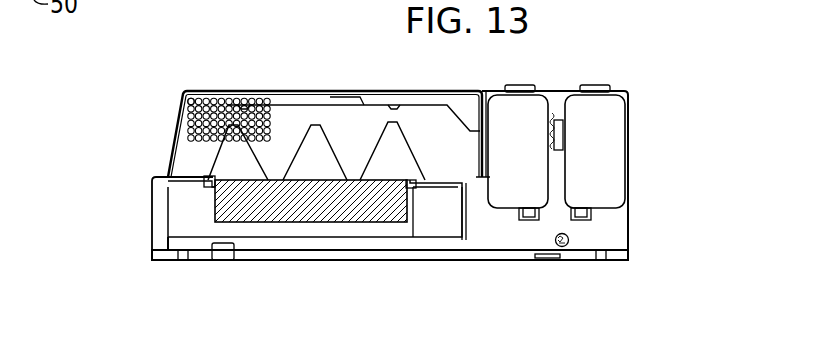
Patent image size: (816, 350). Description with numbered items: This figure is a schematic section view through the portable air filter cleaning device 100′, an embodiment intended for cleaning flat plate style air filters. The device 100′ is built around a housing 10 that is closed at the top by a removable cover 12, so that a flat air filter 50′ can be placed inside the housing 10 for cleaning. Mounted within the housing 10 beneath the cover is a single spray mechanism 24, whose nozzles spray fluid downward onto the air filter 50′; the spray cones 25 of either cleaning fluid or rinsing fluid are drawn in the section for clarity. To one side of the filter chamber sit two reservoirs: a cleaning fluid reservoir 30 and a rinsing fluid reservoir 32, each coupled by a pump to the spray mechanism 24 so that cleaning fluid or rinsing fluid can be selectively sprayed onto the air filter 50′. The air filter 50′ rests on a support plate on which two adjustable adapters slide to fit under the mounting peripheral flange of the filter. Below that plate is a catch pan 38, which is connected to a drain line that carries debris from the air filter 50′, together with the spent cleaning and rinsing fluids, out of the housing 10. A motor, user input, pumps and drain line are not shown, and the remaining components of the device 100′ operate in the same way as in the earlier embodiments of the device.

The housing 10 is at (641, 222).
The removable cover 12 is at (420, 90).
The spray mechanism 24 is at (330, 90).
The spray cones 25 is at (218, 163).
The cleaning fluid reservoir 30 is at (524, 176).
The rinsing fluid reservoir 32 is at (607, 176).
The catch pan 38 is at (372, 224).
The flat air filter 50′ is at (300, 240).
The portable air filter cleaning device 100′ is at (127, 136).